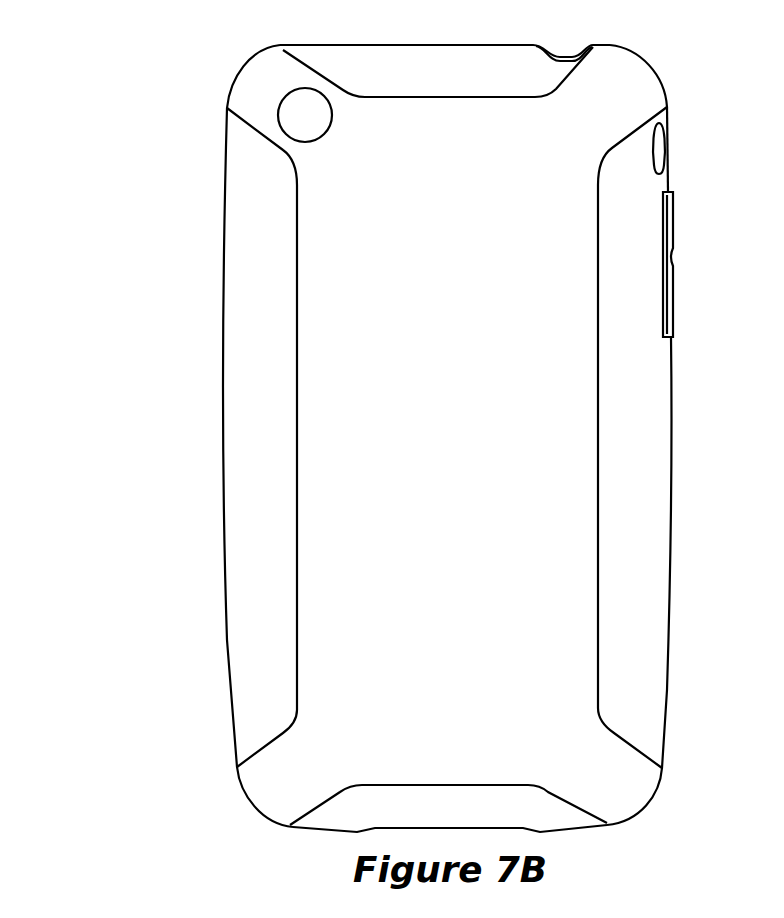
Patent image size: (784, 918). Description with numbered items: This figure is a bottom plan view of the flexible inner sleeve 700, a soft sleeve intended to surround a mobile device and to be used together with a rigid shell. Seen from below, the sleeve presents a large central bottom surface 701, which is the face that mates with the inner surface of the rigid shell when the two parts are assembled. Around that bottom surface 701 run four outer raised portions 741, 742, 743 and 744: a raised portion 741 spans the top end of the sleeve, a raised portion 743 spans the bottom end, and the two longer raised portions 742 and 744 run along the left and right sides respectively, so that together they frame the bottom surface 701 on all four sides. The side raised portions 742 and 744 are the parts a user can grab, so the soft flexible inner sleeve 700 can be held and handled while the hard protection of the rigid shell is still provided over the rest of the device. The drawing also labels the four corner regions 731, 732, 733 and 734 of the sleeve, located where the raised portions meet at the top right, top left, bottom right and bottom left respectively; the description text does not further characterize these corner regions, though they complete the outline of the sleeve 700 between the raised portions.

The flexible inner sleeve 700 is at (124, 317).
The bottom surface 701 is at (465, 588).
The top-right corner portion 731 is at (640, 63).
The top-left corner portion 732 is at (243, 68).
The bottom-right corner portion 733 is at (643, 805).
The bottom-left corner portion 734 is at (253, 803).
The outer raised portion 741 is at (440, 103).
The outer raised portion 742 is at (297, 394).
The outer raised portion 743 is at (438, 780).
The outer raised portion 744 is at (598, 384).